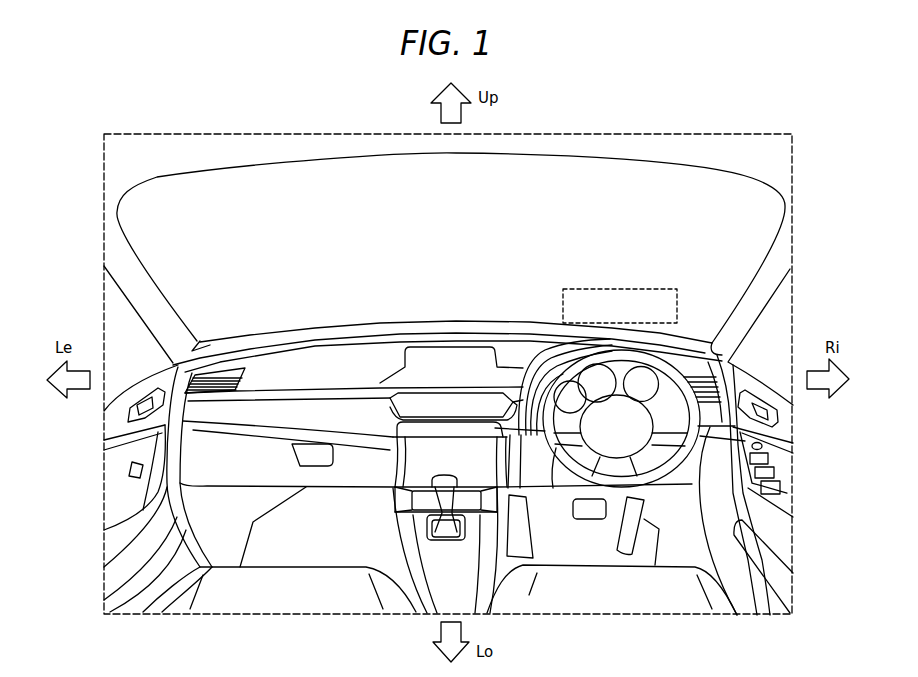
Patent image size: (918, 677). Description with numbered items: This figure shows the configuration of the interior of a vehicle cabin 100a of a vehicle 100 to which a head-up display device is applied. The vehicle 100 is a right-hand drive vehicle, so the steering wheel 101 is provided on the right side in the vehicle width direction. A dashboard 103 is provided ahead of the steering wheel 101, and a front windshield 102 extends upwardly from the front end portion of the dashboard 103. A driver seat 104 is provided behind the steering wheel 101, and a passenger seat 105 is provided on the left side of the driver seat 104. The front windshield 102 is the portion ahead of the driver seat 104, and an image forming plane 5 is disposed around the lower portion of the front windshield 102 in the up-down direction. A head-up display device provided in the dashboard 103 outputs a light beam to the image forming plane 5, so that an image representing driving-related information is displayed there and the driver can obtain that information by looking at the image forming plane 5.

The vehicle 100 is at (128, 128).
The vehicle cabin 100a is at (774, 337).
The steering wheel 101 is at (632, 437).
The front windshield 102 is at (381, 197).
The dashboard 103 is at (378, 366).
The driver seat 104 is at (587, 589).
The passenger seat 105 is at (316, 588).
The image forming plane 5 is at (607, 282).